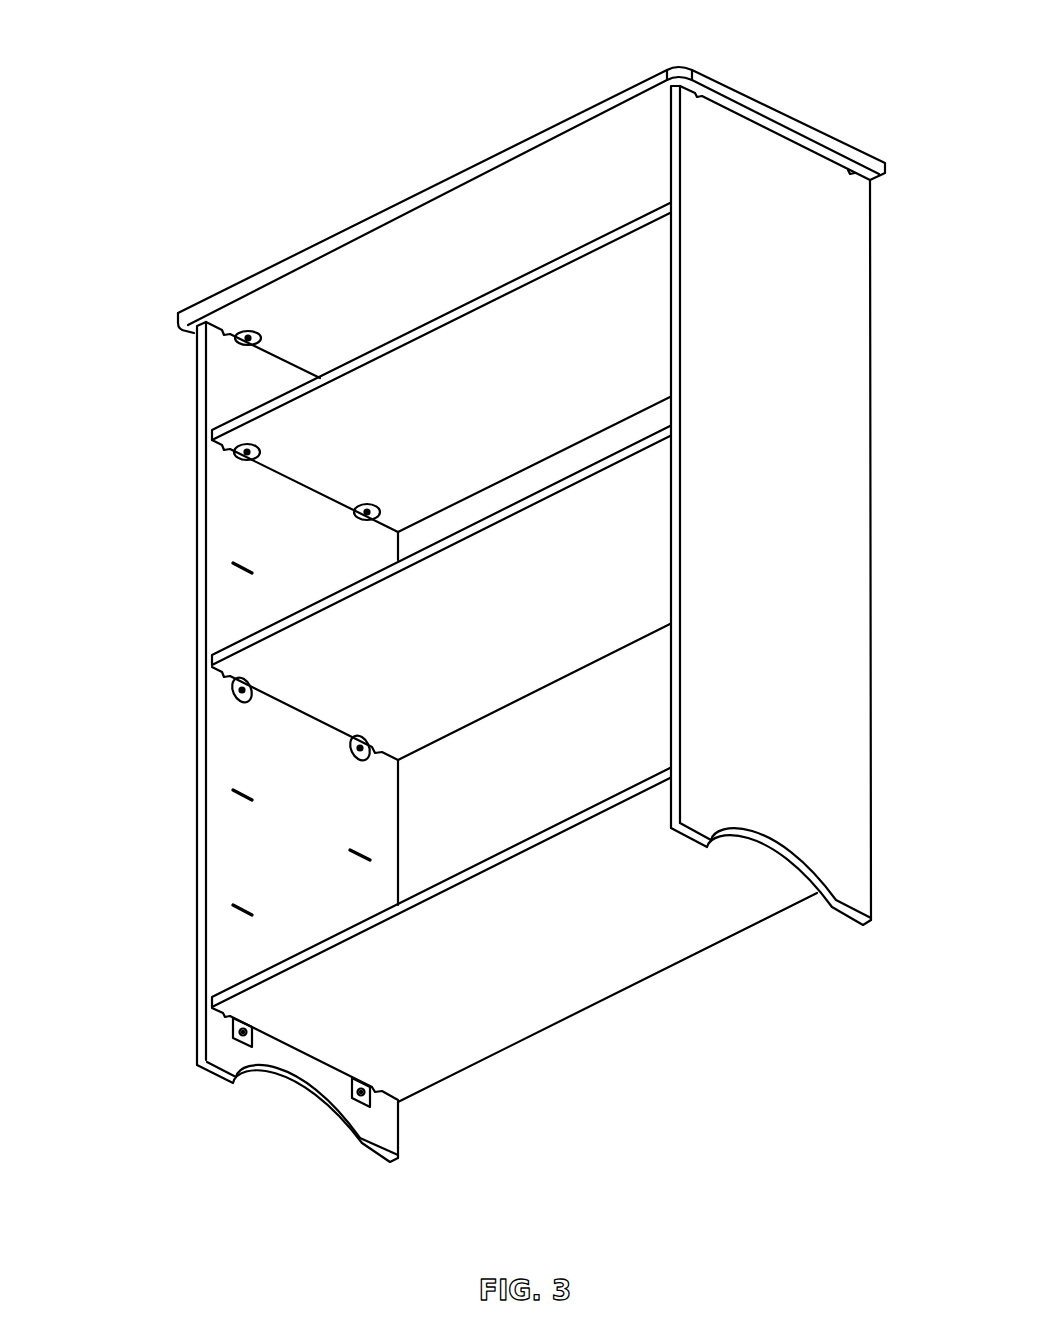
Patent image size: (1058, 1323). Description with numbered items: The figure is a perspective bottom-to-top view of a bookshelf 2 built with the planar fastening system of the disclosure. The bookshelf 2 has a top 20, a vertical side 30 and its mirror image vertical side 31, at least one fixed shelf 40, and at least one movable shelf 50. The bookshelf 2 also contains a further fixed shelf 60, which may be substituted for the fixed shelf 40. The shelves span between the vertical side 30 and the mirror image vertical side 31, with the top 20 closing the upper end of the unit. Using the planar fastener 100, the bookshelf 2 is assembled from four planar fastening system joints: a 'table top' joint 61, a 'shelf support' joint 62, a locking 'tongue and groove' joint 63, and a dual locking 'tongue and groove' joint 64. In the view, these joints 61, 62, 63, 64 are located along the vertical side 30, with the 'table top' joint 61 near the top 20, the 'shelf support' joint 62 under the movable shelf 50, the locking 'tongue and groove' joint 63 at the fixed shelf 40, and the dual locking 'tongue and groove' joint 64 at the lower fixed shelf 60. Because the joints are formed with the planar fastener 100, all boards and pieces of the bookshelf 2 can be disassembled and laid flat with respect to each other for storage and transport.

The bookshelf 2 is at (758, 92).
The top 20 is at (489, 147).
The vertical side 30 is at (189, 907).
The mirror image vertical side 31 is at (786, 392).
The fixed shelf 40 is at (583, 506).
The movable shelf 50 is at (637, 244).
The fixed shelf 60 is at (591, 961).
The 'table top' joint 61 is at (198, 259).
The 'shelf support' joint 62 is at (296, 486).
The locking 'tongue and groove' joint 63 is at (296, 716).
The dual locking 'tongue and groove' joint 64 is at (279, 1047).
The planar fastener 100 is at (232, 325).